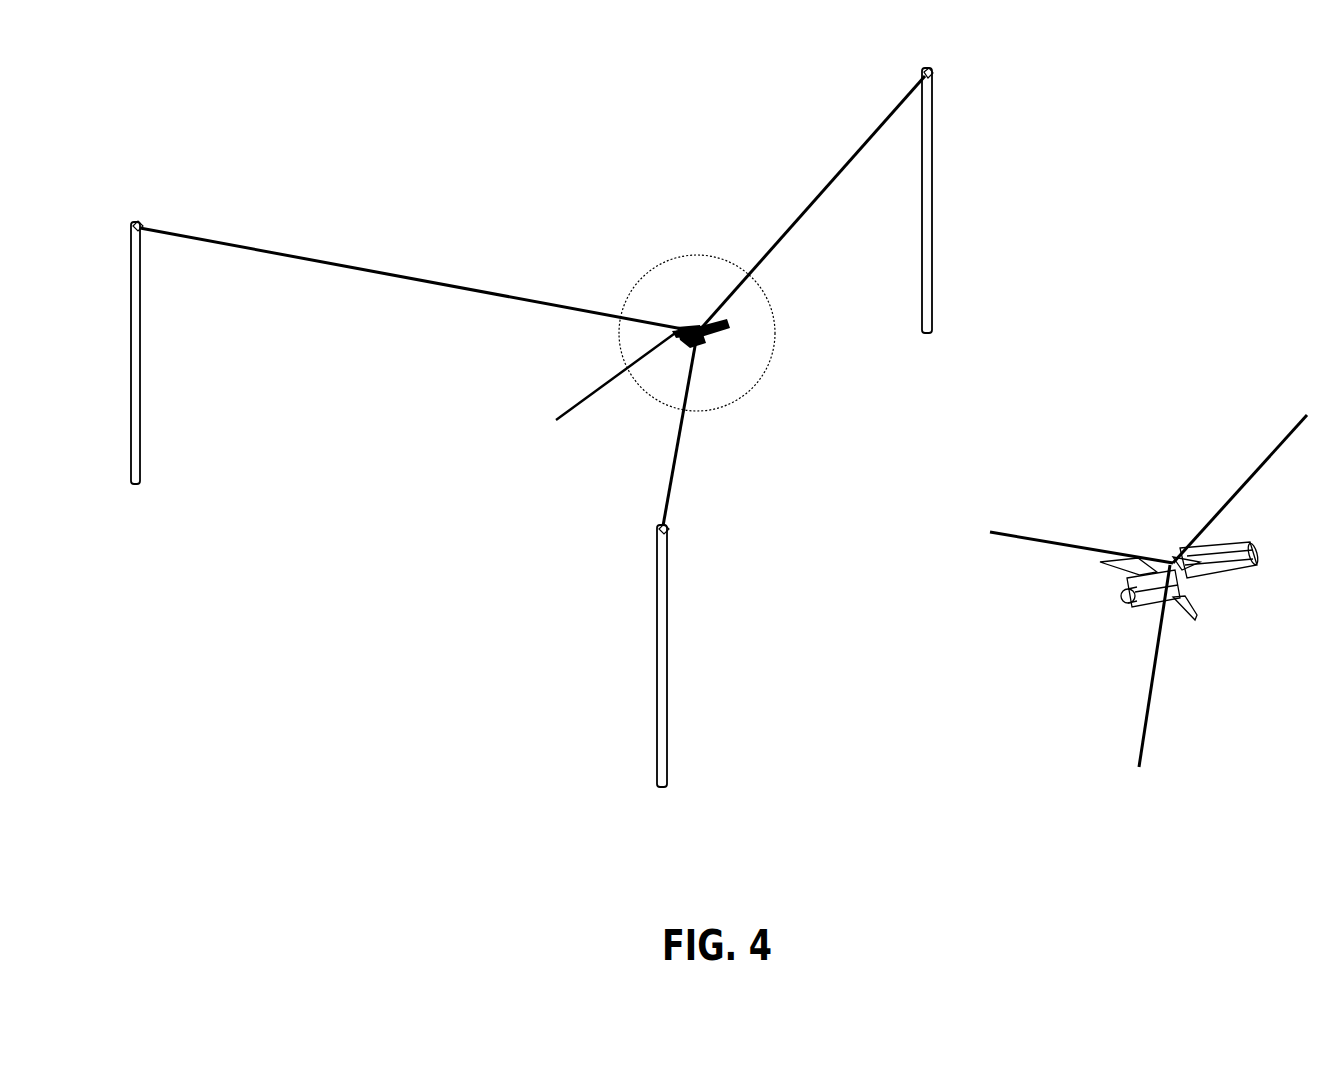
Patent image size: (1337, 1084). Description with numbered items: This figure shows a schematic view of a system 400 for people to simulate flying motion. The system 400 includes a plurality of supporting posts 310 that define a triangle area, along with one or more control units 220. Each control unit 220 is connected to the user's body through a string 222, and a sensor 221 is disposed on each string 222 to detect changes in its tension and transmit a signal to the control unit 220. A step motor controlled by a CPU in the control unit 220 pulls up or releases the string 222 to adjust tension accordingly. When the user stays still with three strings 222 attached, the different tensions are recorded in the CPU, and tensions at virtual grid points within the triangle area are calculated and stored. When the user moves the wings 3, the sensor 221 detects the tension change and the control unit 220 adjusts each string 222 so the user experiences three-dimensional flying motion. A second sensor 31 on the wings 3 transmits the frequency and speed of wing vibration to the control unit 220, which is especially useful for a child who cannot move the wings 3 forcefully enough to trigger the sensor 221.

The system for people to simulate flying motion 400 is at (596, 145).
The control unit 220 is at (146, 225).
The sensor 221 is at (1117, 555).
The string 222 is at (517, 300).
The supporting post 310 is at (658, 695).
The wings 3 is at (700, 345).
The second sensor 31 is at (595, 400).